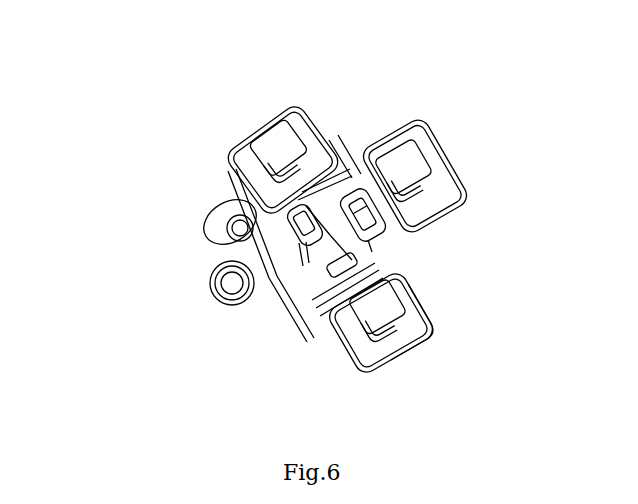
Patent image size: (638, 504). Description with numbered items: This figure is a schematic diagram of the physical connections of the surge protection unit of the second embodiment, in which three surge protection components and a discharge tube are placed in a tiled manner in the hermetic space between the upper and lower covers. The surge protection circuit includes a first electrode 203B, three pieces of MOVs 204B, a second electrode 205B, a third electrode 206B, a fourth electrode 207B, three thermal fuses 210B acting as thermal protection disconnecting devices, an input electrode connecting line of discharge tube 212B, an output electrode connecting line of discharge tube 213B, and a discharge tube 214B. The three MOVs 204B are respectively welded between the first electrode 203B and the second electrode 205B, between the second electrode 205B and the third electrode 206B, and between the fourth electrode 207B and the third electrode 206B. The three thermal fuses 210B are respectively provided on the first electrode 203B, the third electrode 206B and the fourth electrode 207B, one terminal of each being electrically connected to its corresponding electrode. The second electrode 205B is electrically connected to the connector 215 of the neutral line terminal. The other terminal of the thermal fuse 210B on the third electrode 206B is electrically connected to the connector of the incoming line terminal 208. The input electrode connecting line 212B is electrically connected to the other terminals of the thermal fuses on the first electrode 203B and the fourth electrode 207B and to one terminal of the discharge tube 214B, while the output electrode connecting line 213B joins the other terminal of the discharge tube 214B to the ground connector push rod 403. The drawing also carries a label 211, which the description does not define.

The first electrode 203B is at (300, 120).
The MOVs 204B is at (447, 152).
The second electrode 205B is at (355, 160).
The third electrode 206B is at (437, 195).
The fourth electrode 207B is at (407, 312).
The connector of incoming line terminal 'Lin' 208 is at (370, 250).
The thermal fuse 210B is at (400, 328).
The connector bridge 211 is at (330, 308).
The input electrode connecting line of discharge tube 212B is at (282, 313).
The output electrode connecting line of discharge tube 213B is at (257, 253).
The discharge tube 214B is at (217, 302).
The connector of neutral line terminal 'N' 215 is at (300, 250).
The ground connector push rod 403 is at (205, 216).